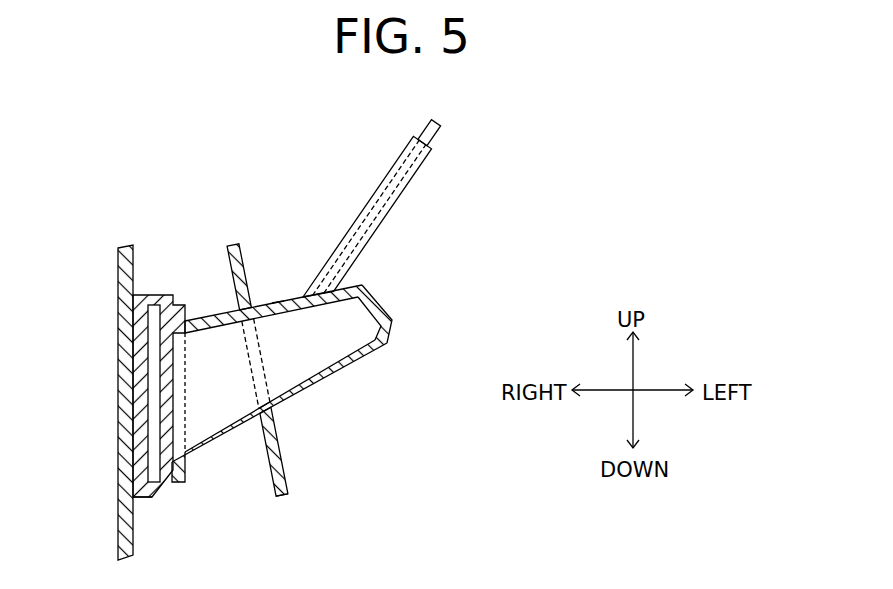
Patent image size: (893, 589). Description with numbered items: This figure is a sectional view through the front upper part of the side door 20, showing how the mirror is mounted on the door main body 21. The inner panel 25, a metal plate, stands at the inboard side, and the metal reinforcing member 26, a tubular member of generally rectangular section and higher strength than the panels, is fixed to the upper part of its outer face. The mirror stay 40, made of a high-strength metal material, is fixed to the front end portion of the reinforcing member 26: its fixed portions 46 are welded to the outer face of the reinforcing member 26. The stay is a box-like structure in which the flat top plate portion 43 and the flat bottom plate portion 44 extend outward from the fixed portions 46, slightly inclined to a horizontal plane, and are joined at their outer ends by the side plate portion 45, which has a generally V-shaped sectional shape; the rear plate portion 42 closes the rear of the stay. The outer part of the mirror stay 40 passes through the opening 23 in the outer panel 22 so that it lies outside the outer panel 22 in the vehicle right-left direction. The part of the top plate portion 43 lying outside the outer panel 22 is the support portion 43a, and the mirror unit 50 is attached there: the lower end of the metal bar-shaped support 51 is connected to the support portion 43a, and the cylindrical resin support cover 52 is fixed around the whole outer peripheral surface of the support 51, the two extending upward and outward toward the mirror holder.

The side door 20 is at (324, 418).
The door main body 21 is at (301, 494).
The outer panel 22 is at (285, 470).
The opening 23 is at (287, 385).
The inner panel 25 is at (118, 282).
The reinforcing member 26 is at (160, 498).
The mirror stay 40 is at (319, 368).
The rear plate portion 42 is at (360, 323).
The top plate portion 43 is at (223, 315).
The support portion 43a is at (278, 300).
The bottom plate portion 44 is at (352, 357).
The side plate portion 45 is at (372, 289).
The fixed portions 46 is at (183, 303).
The mirror unit 50 is at (406, 187).
The support 51 is at (437, 126).
The support cover 52 is at (380, 185).